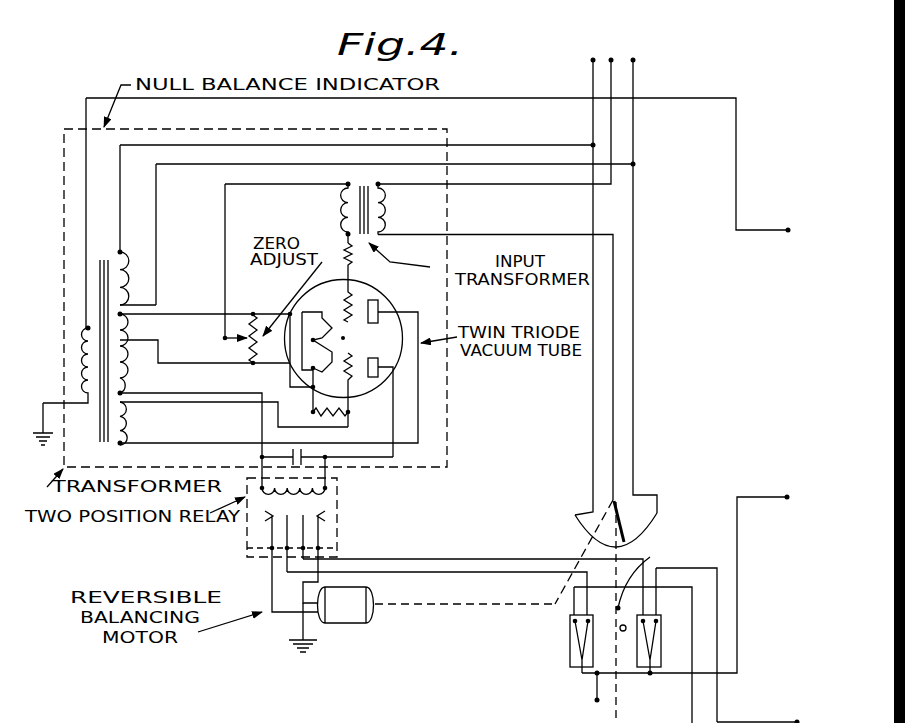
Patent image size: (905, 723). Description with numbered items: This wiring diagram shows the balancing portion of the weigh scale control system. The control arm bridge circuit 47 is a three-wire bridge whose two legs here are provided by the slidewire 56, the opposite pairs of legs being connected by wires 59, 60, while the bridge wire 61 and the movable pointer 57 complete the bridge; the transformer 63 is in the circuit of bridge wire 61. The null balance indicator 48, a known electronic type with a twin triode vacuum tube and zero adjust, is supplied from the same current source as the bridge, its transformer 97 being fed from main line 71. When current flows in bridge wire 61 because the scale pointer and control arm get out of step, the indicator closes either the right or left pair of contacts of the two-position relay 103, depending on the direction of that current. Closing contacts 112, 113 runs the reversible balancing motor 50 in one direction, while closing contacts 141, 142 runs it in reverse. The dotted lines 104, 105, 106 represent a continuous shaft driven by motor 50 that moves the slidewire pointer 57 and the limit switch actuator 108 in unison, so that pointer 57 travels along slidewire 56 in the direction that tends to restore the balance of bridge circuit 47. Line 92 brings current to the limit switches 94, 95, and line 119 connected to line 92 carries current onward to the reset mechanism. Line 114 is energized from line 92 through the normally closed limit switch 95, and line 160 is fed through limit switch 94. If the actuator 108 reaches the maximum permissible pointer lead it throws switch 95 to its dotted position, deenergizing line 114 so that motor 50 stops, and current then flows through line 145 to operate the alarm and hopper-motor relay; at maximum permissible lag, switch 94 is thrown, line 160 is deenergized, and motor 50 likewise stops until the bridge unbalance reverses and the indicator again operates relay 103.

The null balance indicator 48 is at (450, 134).
The transformer 97 is at (85, 352).
The transformer 63 is at (383, 212).
The main line 71 is at (770, 230).
The wire 59 is at (591, 59).
The bridge wire 61 is at (611, 59).
The wire 60 is at (633, 59).
The control arm bridge circuit 47 is at (637, 360).
The slidewire 56 is at (658, 508).
The slidewire pointer 57 is at (630, 524).
The shaft 105 is at (587, 543).
The shaft 104 is at (474, 594).
The shaft 106 is at (617, 706).
The limit switch actuator 108 is at (652, 589).
The line 114 is at (452, 551).
The line 160 is at (510, 545).
The limit switch 94 is at (570, 648).
The limit switch 95 is at (683, 608).
The line 92 is at (778, 479).
The line 119 is at (595, 700).
The line 145 is at (745, 702).
The two-position relay 103 is at (338, 556).
The contact 112 is at (322, 523).
The contact 113 is at (306, 540).
The contact 141 is at (270, 526).
The contact 142 is at (287, 537).
The reversible balancing motor 50 is at (352, 625).